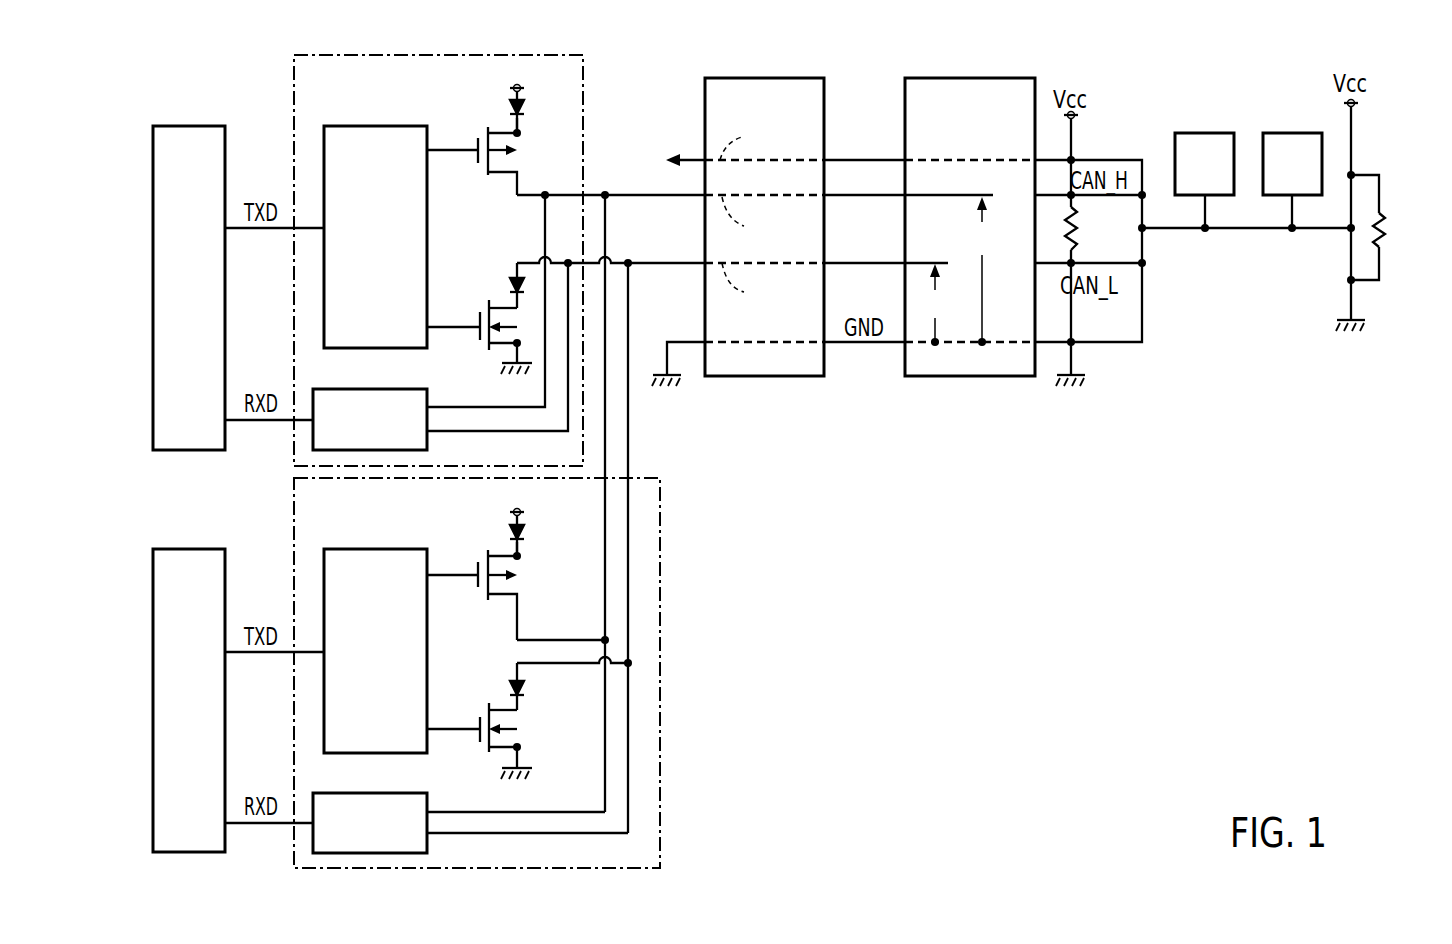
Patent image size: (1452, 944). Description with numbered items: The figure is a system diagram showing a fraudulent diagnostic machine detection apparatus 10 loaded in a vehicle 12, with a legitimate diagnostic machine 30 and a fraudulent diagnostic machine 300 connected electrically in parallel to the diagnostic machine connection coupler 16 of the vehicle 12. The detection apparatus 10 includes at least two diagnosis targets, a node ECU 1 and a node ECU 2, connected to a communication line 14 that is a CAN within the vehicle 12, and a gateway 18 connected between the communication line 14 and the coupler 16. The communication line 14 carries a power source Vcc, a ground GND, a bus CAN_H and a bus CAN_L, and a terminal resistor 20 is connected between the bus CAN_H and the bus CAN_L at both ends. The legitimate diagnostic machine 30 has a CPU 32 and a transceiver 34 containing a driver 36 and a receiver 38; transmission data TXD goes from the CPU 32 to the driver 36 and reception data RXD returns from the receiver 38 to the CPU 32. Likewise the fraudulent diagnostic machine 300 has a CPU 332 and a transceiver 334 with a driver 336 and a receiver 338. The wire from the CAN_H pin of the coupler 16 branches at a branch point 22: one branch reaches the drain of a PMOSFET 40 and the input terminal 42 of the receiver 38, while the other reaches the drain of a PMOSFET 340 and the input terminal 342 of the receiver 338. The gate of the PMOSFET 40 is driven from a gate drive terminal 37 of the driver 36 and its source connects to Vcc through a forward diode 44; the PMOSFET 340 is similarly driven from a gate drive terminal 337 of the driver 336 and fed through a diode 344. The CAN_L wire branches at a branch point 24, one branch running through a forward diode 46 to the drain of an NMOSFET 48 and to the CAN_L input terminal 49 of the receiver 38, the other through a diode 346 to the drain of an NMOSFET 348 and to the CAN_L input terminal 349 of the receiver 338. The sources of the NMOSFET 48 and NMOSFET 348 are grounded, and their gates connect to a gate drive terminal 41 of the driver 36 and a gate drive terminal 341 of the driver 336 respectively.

The node ECU 1 is at (1206, 133).
The node ECU 2 is at (1280, 133).
The fraudulent diagnostic machine detection apparatus 10 is at (1052, 73).
The vehicle 12 is at (831, 520).
The communication line 14 is at (842, 150).
The diagnostic machine connection coupler 16 is at (765, 376).
The gateway 18 is at (968, 376).
The terminal resistor 20 is at (1078, 228).
The branch point 22 is at (605, 193).
The branch point 24 is at (630, 261).
The legitimate diagnostic machine 30 is at (213, 84).
The CPU 32 is at (190, 126).
The transceiver 34 is at (585, 90).
The driver 36 is at (360, 126).
The gate drive terminal 37 is at (430, 154).
The receiver 38 is at (355, 389).
The PMOSFET 40 is at (478, 148).
The gate drive terminal 41 is at (428, 327).
The input terminal 42 is at (428, 407).
The diode 44 is at (525, 110).
The diode 46 is at (511, 287).
The NMOSFET 48 is at (480, 340).
The CAN_L input terminal 49 is at (428, 432).
The fraudulent diagnostic machine 300 is at (213, 503).
The CPU 332 is at (190, 549).
The transceiver 334 is at (662, 830).
The driver 336 is at (360, 549).
The gate drive terminal 337 is at (430, 579).
The receiver 338 is at (355, 793).
The PMOSFET 340 is at (478, 573).
The gate drive terminal 341 is at (428, 729).
The input terminal 342 is at (428, 812).
The diode 344 is at (525, 534).
The diode 346 is at (511, 690).
The NMOSFET 348 is at (480, 744).
The CAN_L input terminal 349 is at (428, 834).